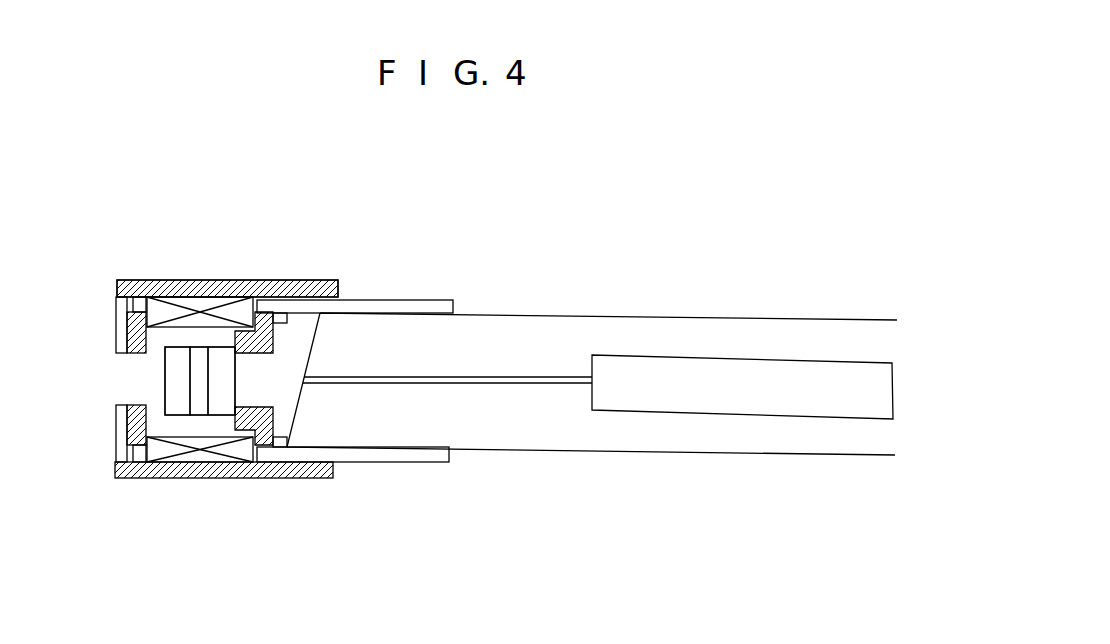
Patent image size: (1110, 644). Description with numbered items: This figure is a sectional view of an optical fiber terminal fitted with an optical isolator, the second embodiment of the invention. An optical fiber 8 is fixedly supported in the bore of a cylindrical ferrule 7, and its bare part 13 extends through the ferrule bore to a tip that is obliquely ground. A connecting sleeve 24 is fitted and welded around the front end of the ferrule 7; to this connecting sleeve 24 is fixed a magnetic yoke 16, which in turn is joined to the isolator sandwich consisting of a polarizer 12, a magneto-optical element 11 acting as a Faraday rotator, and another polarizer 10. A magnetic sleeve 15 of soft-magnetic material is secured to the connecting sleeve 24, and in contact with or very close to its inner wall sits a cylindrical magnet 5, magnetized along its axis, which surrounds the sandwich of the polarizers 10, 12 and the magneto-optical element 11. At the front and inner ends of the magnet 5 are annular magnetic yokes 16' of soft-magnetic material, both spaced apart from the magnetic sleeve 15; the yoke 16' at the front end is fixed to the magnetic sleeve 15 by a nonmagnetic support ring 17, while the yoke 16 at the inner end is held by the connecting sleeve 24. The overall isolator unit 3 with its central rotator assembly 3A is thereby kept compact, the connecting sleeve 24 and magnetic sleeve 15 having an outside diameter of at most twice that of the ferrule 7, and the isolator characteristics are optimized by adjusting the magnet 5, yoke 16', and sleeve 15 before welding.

The motor unit 3 is at (224, 277).
The rotor 3A is at (158, 378).
The cylindrical magnet 5 is at (212, 455).
The cylindrical ferrule 7 is at (547, 327).
The optical fiber 8 is at (743, 405).
The polarizer 10 is at (180, 405).
The magneto-optical element 11 is at (200, 408).
The polarizer 12 is at (236, 408).
The bare part of the optical fiber 13 is at (534, 388).
The magnetic sleeve 15 is at (147, 280).
The magnetic yoke 16 is at (290, 318).
The annular magnetic yoke 16' is at (89, 382).
The nonmagnetic support ring 17 is at (120, 322).
The connecting sleeve 24 is at (403, 305).